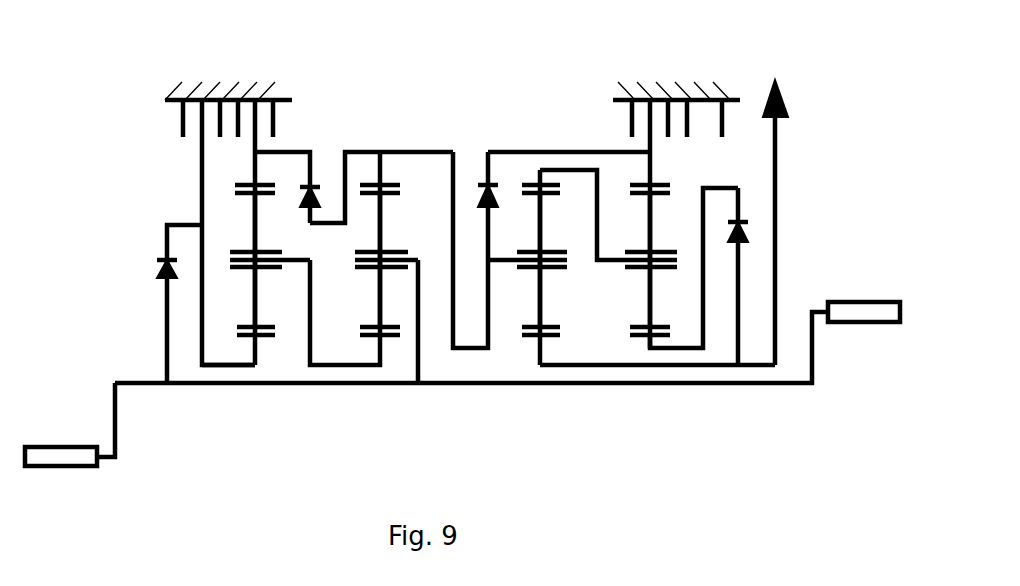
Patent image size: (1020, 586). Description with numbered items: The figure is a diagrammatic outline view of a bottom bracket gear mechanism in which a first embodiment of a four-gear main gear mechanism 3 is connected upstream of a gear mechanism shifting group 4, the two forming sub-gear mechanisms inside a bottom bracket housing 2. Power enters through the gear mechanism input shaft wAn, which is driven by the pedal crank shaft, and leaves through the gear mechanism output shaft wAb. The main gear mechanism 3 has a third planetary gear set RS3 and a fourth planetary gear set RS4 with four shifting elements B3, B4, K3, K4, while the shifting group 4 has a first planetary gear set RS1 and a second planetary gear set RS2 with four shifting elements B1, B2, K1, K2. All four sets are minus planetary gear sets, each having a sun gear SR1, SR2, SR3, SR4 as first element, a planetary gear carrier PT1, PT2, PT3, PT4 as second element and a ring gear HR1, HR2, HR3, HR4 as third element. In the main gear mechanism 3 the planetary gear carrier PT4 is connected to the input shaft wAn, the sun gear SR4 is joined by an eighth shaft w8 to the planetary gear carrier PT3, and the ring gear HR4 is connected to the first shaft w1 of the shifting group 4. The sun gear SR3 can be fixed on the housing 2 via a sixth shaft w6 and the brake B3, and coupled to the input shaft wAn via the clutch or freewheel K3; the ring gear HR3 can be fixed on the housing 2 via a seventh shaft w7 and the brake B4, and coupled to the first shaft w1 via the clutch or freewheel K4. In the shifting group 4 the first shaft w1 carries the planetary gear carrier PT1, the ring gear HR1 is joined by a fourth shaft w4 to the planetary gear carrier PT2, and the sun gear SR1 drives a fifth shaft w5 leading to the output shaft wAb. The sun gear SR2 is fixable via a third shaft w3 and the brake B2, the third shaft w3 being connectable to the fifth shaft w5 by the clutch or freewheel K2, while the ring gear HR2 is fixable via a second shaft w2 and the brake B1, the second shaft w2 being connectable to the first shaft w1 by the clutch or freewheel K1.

The bottom bracket housing 2 is at (278, 82).
The main gear mechanism 3 is at (328, 160).
The gear mechanism shifting group 4 is at (572, 150).
The first shifting element B1 is at (676, 198).
The second shifting element B2 is at (708, 92).
The third shifting element B3 is at (219, 206).
The fourth shifting element B4 is at (259, 206).
The fifth shifting element K1 is at (478, 182).
The sixth shifting element K2 is at (744, 260).
The seventh shifting element K3 is at (182, 304).
The eighth shifting element K4 is at (296, 211).
The ring gear of the first planetary gear set HR1 is at (537, 182).
The ring gear of the second planetary gear set HR2 is at (660, 183).
The ring gear of the third planetary gear set HR3 is at (243, 183).
The ring gear of the fourth planetary gear set HR4 is at (393, 182).
The sun gear of the first planetary gear set SR1 is at (548, 337).
The sun gear of the second planetary gear set SR2 is at (665, 337).
The sun gear of the third planetary gear set SR3 is at (247, 337).
The sun gear of the fourth planetary gear set SR4 is at (378, 337).
The planetary gear carrier of the first planetary gear set PT1 is at (510, 263).
The planetary gear carrier of the second planetary gear set PT2 is at (613, 258).
The planetary gear carrier of the third planetary gear set PT3 is at (293, 263).
The planetary gear carrier of the fourth planetary gear set PT4 is at (410, 263).
The first planetary gear set RS1 is at (550, 305).
The second planetary gear set RS2 is at (658, 305).
The third planetary gear set RS3 is at (265, 305).
The fourth planetary gear set RS4 is at (383, 305).
The first shaft w1 is at (470, 252).
The second shaft w2 is at (582, 193).
The third shaft w3 is at (671, 322).
The fourth shaft w4 is at (567, 267).
The fifth shaft w5 is at (657, 351).
The sixth shaft w6 is at (228, 354).
The seventh shaft w7 is at (282, 187).
The eighth shaft w8 is at (345, 259).
The gear mechanism input shaft wAn is at (462, 363).
The gear mechanism output shaft wAb is at (793, 222).